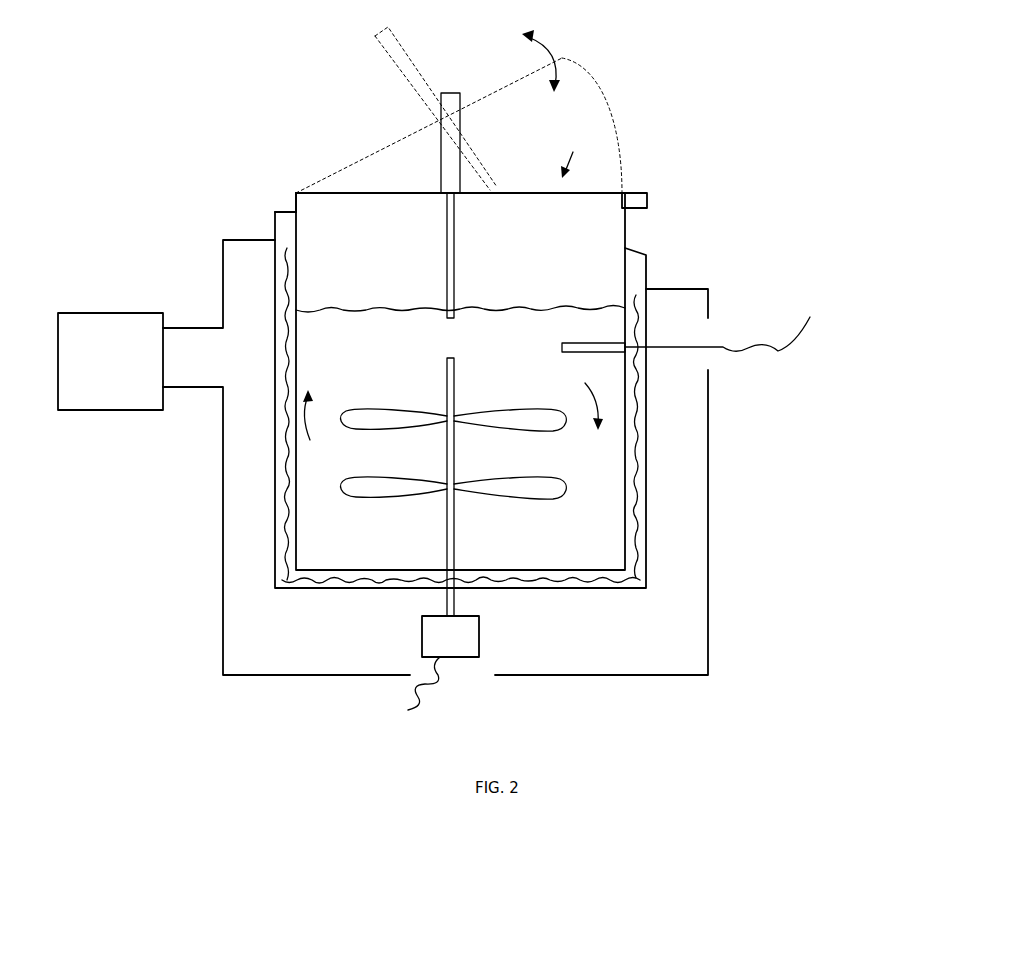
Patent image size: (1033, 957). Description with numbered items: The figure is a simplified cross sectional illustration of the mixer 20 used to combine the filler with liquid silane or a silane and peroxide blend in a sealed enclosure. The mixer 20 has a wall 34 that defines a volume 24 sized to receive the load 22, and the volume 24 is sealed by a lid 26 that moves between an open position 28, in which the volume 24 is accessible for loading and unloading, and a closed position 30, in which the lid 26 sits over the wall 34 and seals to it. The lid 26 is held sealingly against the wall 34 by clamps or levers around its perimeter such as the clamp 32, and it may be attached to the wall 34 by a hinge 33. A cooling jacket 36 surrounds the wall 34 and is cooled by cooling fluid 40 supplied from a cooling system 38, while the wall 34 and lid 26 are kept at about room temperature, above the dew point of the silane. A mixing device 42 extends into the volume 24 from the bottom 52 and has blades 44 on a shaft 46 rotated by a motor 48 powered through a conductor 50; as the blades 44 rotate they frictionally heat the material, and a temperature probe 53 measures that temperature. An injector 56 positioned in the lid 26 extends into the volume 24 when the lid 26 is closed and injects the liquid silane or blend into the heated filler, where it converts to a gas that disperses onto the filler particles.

The mixer 20 is at (743, 571).
The load 22 is at (518, 340).
The volume 24 is at (460, 384).
The lid 26 is at (627, 184).
The open position 28 is at (560, 58).
The closed position 30 is at (578, 155).
The clamp 32 is at (648, 195).
The hinge 33 is at (296, 192).
The wall 34 is at (295, 198).
The cooling jacket 36 is at (646, 262).
The cooling system 38 is at (110, 361).
The cooling fluid 40 is at (223, 261).
The mixing device 42 is at (456, 452).
The blades 44 is at (368, 410).
The shaft 46 is at (445, 372).
The motor 48 is at (470, 632).
The conductor 50 is at (420, 675).
The bottom 52 is at (345, 570).
The temperature probe 53 is at (610, 350).
The injector 56 is at (460, 121).